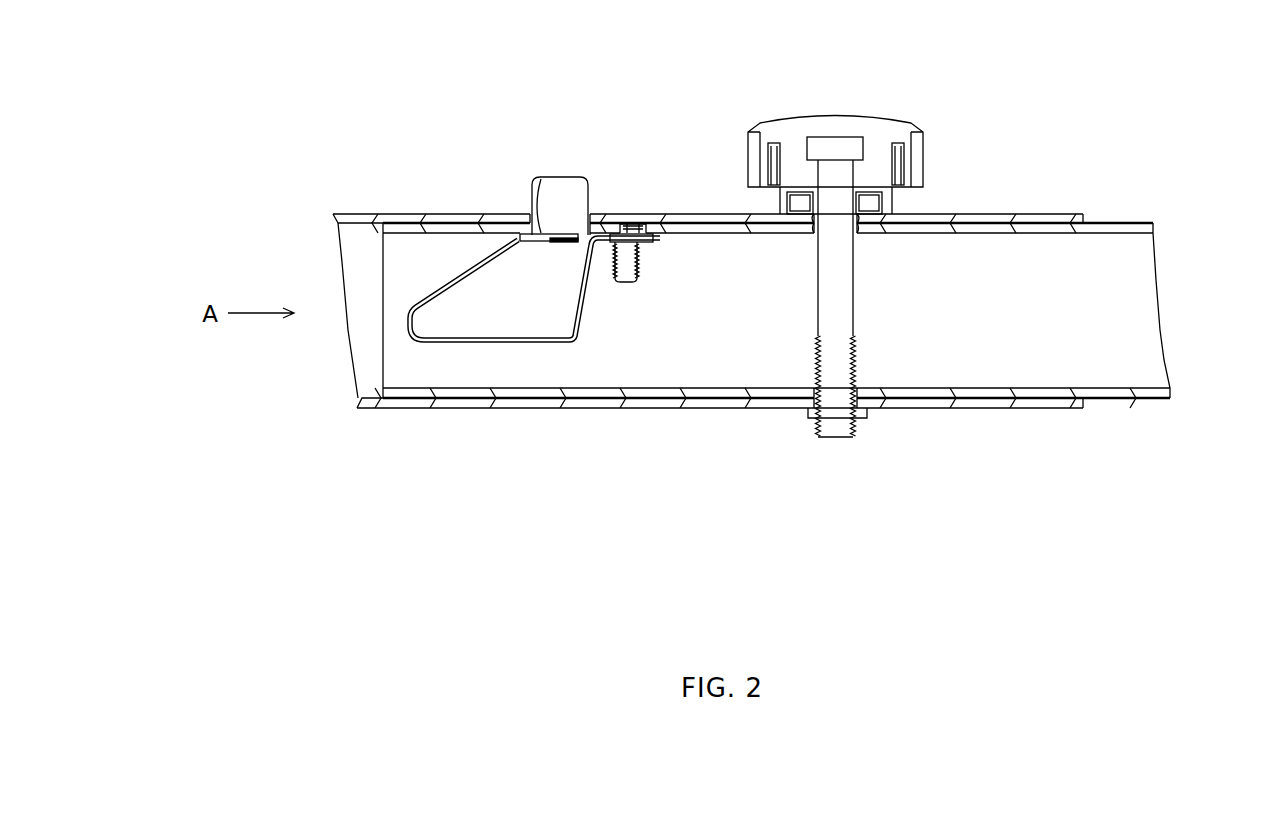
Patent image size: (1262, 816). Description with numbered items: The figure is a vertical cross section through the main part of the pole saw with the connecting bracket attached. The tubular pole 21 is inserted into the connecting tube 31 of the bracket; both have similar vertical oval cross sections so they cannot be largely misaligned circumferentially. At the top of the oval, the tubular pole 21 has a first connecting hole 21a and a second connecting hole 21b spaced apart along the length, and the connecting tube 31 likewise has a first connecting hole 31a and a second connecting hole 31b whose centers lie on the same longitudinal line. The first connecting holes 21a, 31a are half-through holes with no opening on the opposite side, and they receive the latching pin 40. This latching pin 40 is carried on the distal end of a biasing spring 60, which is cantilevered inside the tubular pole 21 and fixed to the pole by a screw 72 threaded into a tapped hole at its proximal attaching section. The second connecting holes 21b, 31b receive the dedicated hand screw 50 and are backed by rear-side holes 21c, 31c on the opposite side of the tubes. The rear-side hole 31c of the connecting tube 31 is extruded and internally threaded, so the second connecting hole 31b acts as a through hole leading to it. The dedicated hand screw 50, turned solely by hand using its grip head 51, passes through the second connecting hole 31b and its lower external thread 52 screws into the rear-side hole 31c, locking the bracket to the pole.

The tubular pole 21 is at (456, 388).
The connecting tube 31 is at (1038, 150).
The first connecting hole 31a is at (538, 185).
The first connecting hole 21a is at (548, 245).
The latching pin 40 is at (572, 185).
The dedicated hand screw 50 is at (936, 100).
The grip head 51 is at (828, 117).
The external thread 52 is at (815, 363).
The biasing spring 60 is at (557, 340).
The screw 72 is at (640, 264).
The second connecting hole 31b is at (822, 232).
The second connecting hole 21b is at (846, 234).
The rear-side hole 21c is at (858, 360).
The rear-side hole 31c is at (843, 418).